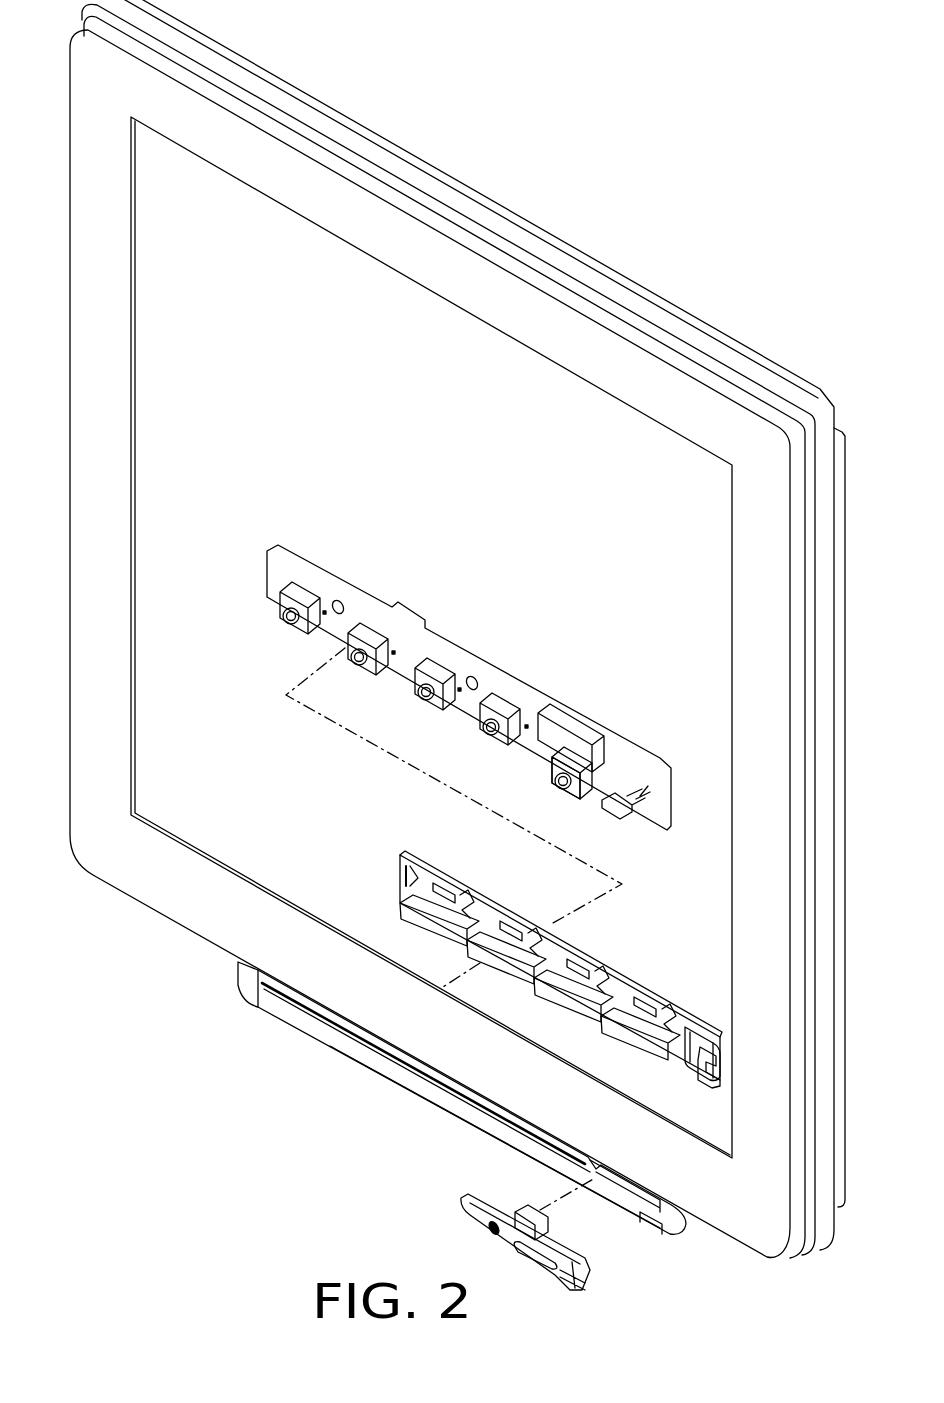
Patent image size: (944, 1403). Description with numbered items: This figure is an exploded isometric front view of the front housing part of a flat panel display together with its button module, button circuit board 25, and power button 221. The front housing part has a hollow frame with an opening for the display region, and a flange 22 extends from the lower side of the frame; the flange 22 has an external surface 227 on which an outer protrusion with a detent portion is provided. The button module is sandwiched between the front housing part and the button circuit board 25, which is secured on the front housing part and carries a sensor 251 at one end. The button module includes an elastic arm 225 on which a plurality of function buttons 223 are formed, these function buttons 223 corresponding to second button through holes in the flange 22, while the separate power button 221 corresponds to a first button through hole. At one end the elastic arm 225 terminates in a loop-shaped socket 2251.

The flange 22 is at (414, 1098).
The power button 221 is at (470, 1213).
The function buttons 223 is at (410, 902).
The elastic arm 225 is at (707, 1032).
The loop-shaped socket 2251 is at (712, 1076).
The external surface 227 is at (375, 1065).
The button circuit board 25 is at (428, 652).
The sensor 251 is at (553, 782).